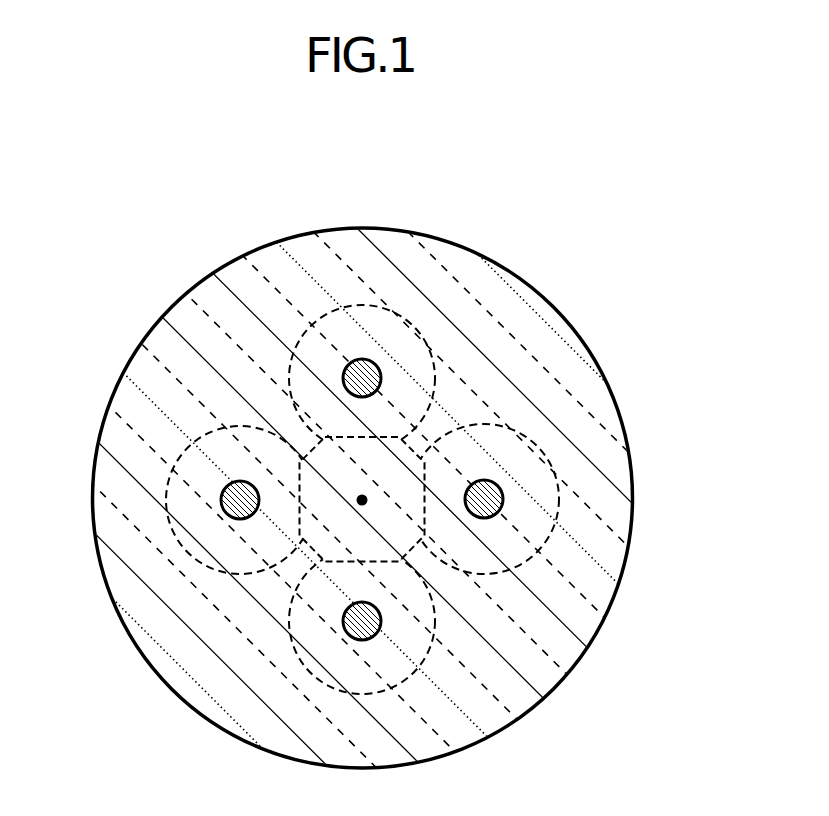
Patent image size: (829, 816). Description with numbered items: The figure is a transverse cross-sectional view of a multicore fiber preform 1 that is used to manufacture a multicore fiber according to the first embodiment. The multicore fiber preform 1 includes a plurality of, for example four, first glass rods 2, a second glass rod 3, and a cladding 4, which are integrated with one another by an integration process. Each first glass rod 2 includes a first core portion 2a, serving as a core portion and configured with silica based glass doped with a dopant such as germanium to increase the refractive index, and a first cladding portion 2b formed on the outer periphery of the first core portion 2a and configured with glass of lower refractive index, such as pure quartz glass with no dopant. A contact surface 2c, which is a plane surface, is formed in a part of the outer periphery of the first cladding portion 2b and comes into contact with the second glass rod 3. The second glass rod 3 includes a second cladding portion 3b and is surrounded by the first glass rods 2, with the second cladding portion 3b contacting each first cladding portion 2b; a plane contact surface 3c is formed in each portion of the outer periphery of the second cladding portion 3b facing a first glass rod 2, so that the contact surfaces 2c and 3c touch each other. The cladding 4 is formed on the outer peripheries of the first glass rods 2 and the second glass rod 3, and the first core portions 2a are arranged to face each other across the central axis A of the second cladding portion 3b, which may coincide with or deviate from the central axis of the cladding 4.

The multicore fiber preform 1 is at (526, 209).
The first glass rod 2 is at (743, 482).
The first core portion 2a is at (503, 494).
The first cladding portion 2b is at (497, 545).
The contact surface 2c is at (418, 517).
The second glass rod 3 is at (743, 338).
The second cladding portion 3b is at (420, 477).
The contact surface 3c is at (430, 473).
The cladding 4 is at (400, 234).
The central axis A is at (362, 500).